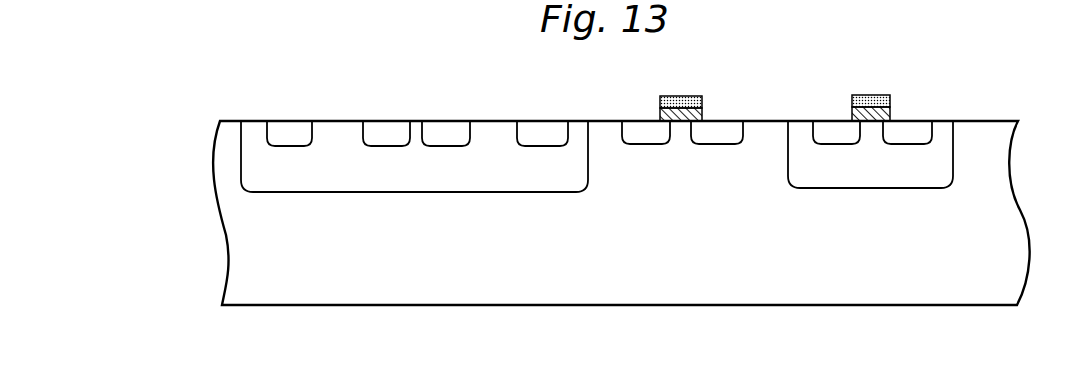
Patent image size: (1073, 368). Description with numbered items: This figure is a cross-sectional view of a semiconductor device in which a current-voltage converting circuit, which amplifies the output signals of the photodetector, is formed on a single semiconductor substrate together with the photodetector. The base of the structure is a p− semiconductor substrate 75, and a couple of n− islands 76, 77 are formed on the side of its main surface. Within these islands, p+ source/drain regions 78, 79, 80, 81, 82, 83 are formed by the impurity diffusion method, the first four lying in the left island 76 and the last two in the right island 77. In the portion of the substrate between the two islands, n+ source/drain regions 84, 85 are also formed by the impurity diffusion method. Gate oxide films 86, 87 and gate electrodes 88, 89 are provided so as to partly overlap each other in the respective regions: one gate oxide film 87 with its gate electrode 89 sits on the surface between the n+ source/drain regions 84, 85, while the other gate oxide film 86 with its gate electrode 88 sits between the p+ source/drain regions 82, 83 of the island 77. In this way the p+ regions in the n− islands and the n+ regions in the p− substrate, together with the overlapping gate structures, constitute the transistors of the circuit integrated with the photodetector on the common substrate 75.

The p− semiconductor substrate 75 is at (997, 187).
The n− island 76 is at (254, 134).
The n− island 77 is at (947, 126).
The p+ source/drain region 78 is at (288, 128).
The p+ source/drain region 79 is at (373, 128).
The p+ source/drain region 80 is at (434, 128).
The p+ source/drain region 81 is at (524, 128).
The p+ source/drain region 82 is at (820, 128).
The p+ source/drain region 83 is at (928, 128).
The n+ source/drain region 84 is at (630, 128).
The n+ source/drain region 85 is at (734, 128).
The gate oxide film 86 is at (881, 97).
The gate oxide film 87 is at (665, 97).
The gate electrode 88 is at (857, 96).
The gate electrode 89 is at (684, 97).